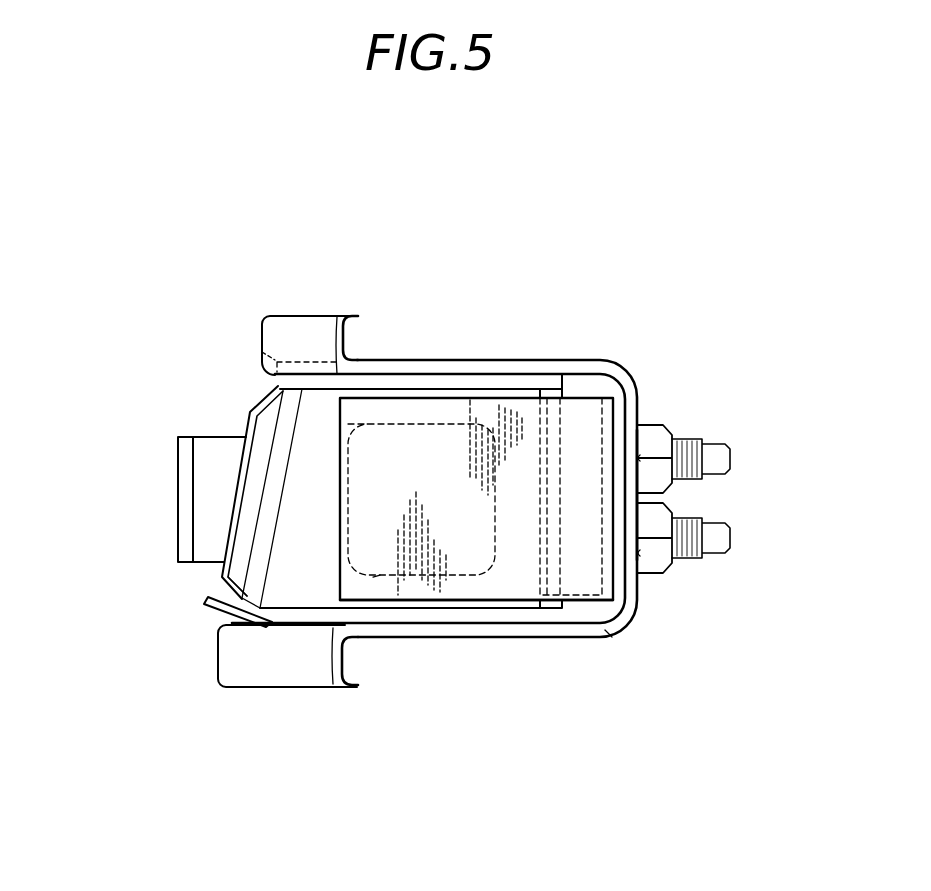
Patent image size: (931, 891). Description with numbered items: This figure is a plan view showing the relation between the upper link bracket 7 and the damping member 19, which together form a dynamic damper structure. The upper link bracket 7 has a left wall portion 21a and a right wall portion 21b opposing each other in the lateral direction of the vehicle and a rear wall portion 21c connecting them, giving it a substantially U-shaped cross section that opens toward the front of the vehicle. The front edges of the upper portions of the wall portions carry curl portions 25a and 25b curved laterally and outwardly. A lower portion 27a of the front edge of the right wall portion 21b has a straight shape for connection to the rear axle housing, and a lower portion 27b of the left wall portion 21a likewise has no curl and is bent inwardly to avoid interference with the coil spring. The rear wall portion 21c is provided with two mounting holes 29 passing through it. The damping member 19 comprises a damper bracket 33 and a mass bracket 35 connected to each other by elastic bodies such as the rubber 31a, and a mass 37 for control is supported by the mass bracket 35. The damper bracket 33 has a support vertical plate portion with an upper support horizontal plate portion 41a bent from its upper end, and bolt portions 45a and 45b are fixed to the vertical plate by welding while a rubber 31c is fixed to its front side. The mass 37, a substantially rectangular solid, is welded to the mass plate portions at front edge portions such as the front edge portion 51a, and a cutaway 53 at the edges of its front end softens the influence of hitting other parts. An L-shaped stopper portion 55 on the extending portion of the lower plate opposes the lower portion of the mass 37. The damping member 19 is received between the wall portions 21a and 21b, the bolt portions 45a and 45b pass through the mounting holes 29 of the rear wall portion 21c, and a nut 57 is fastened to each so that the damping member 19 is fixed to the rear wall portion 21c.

The upper link bracket 7 is at (519, 360).
The damping member 19 is at (456, 389).
The left wall portion 21a is at (558, 634).
The right wall portion 21b is at (377, 372).
The rear wall portion 21c is at (638, 397).
The curl portion 25a is at (290, 658).
The curl portion 25b is at (288, 325).
The lower portion of the right wall portion front edge 27a is at (232, 623).
The lower portion of the left wall portion 27b is at (260, 353).
The mounting holes 29 is at (640, 455).
The rubber 31a is at (373, 577).
The rubber 31c is at (610, 637).
The damper bracket 33 is at (462, 612).
The mass bracket 35 is at (352, 613).
The mass 37 is at (282, 440).
The upper support horizontal plate portion 41a is at (577, 423).
The bolt portion 45a is at (683, 440).
The bolt portion 45b is at (683, 515).
The front edge portion of the upper mass horizontal plate portion 51a is at (265, 566).
The cutaway 53 is at (257, 412).
The stopper portion 55 is at (178, 468).
The nut 57 is at (645, 430).